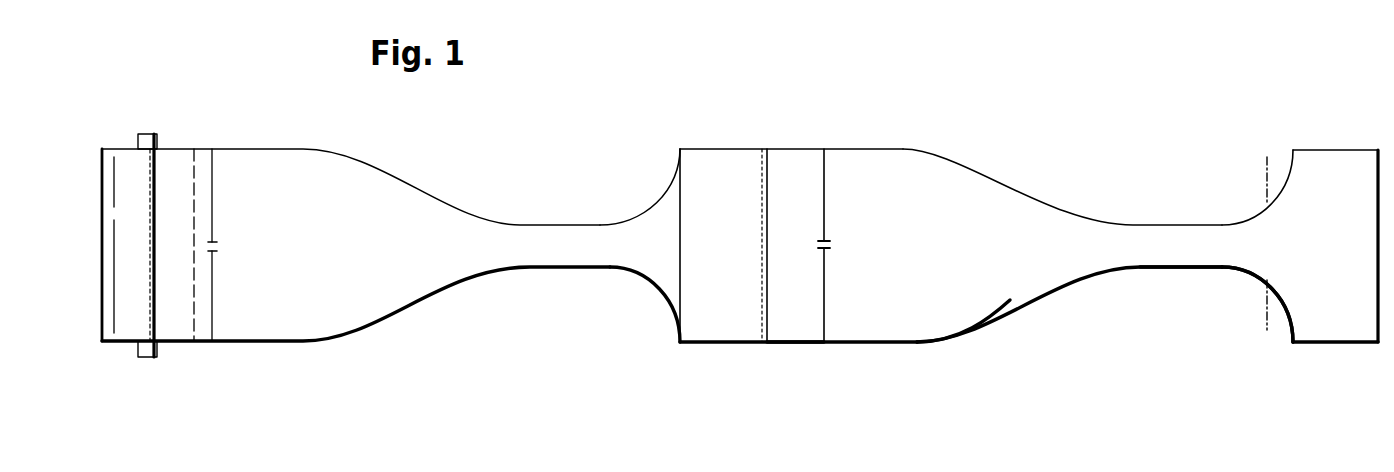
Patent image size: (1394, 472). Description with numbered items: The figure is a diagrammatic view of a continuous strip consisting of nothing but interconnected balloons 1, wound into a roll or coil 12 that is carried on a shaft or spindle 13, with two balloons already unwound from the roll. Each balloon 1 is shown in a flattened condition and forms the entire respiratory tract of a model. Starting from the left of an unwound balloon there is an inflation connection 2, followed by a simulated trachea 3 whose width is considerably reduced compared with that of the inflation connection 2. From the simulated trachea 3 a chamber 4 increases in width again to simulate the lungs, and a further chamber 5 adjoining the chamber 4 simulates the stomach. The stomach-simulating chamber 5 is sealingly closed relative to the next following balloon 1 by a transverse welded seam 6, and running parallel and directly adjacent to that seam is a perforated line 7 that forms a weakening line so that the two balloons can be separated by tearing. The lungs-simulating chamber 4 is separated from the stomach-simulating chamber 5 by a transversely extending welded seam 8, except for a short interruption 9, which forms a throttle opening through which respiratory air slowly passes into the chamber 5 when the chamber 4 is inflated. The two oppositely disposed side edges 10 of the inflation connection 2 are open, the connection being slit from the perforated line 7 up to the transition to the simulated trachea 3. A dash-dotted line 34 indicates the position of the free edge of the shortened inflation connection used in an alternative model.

The balloon 1 is at (583, 286).
The inflation connection 2 is at (1307, 317).
The simulated trachea 3 is at (1160, 253).
The chamber 4 is at (930, 323).
The further chamber 5 is at (797, 318).
The transverse welded seam 6 is at (767, 168).
The perforated line 7 is at (758, 320).
The welded seam 8 is at (825, 167).
The interruption 9 is at (833, 245).
The side edges 10 is at (712, 148).
The roll or coil 12 is at (172, 344).
The shaft or spindle 13 is at (157, 144).
The free edge of the inflation connection 34 is at (1265, 173).